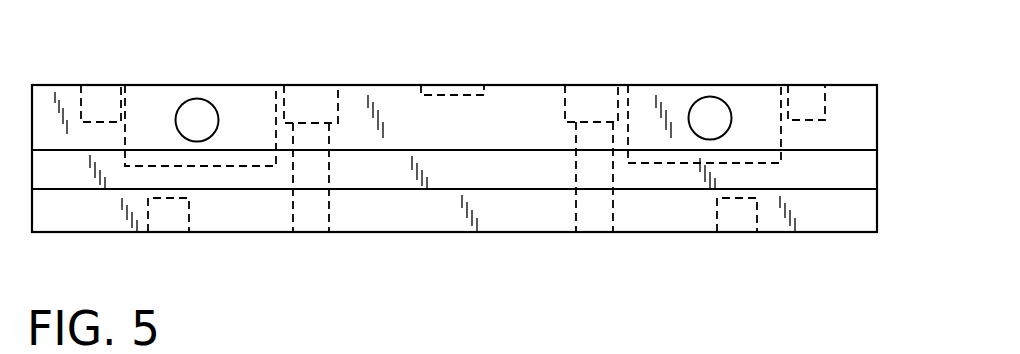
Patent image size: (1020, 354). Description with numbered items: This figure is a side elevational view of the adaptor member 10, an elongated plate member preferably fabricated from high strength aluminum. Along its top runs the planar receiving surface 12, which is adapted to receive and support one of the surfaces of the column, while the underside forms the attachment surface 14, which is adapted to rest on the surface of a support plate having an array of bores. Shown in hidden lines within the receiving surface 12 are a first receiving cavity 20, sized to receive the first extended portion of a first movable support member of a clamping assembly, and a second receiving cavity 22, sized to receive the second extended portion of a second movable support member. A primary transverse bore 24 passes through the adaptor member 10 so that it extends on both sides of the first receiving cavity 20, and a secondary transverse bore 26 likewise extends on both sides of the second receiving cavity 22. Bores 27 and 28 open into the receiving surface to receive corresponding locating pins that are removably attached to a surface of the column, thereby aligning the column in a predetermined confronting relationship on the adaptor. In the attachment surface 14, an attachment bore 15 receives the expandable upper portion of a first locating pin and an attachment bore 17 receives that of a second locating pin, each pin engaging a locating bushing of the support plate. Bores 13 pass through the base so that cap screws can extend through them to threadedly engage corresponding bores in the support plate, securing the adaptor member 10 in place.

The adaptor member 10 is at (878, 125).
The planar receiving surface 12 is at (66, 85).
The bores 13 is at (287, 102).
The attachment surface 14 is at (798, 232).
The attachment bore 15 is at (188, 198).
The attachment bore 17 is at (753, 215).
The first receiving cavity 20 is at (127, 115).
The second receiving cavity 22 is at (782, 117).
The primary transverse bore 24 is at (194, 108).
The secondary transverse bore 26 is at (732, 118).
The bore 27 is at (86, 107).
The bore 28 is at (790, 115).